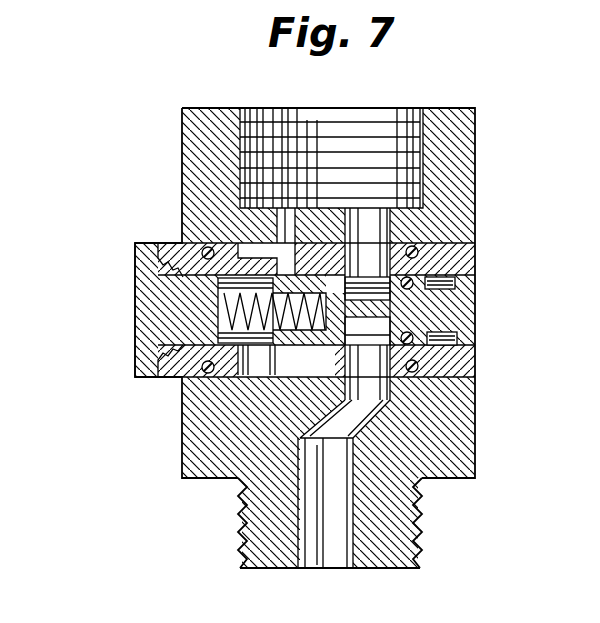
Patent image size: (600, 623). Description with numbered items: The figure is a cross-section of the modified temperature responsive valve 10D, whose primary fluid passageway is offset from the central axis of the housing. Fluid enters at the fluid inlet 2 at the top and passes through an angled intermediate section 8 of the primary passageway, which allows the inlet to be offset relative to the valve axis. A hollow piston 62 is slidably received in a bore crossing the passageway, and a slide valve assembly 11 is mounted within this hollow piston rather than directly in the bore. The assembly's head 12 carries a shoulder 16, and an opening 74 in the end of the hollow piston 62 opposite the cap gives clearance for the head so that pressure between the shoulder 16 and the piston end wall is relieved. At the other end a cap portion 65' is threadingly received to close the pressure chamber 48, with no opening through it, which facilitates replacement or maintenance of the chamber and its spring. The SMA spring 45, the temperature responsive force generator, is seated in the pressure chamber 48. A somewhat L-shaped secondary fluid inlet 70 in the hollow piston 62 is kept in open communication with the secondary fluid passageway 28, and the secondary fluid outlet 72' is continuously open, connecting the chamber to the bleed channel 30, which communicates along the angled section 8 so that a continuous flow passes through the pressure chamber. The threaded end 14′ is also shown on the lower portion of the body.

The fluid inlet 2 is at (397, 108).
The secondary fluid passageway 28 is at (290, 215).
The secondary fluid inlet 70 is at (250, 243).
The slide valve assembly 11 is at (445, 244).
The opening 74 is at (463, 245).
The head 12 is at (472, 307).
The shoulder 16 is at (455, 322).
The hollow piston 62 is at (474, 384).
The cap portion 65' is at (134, 310).
The pressure chamber 48 is at (210, 306).
The SMA spring 45 is at (274, 360).
The secondary fluid outlet 72' is at (297, 384).
The bleed channel 30 is at (300, 402).
The angled intermediate section 8 is at (367, 420).
The temperature responsive valve 10D is at (230, 485).
The external thread 14′ is at (243, 548).